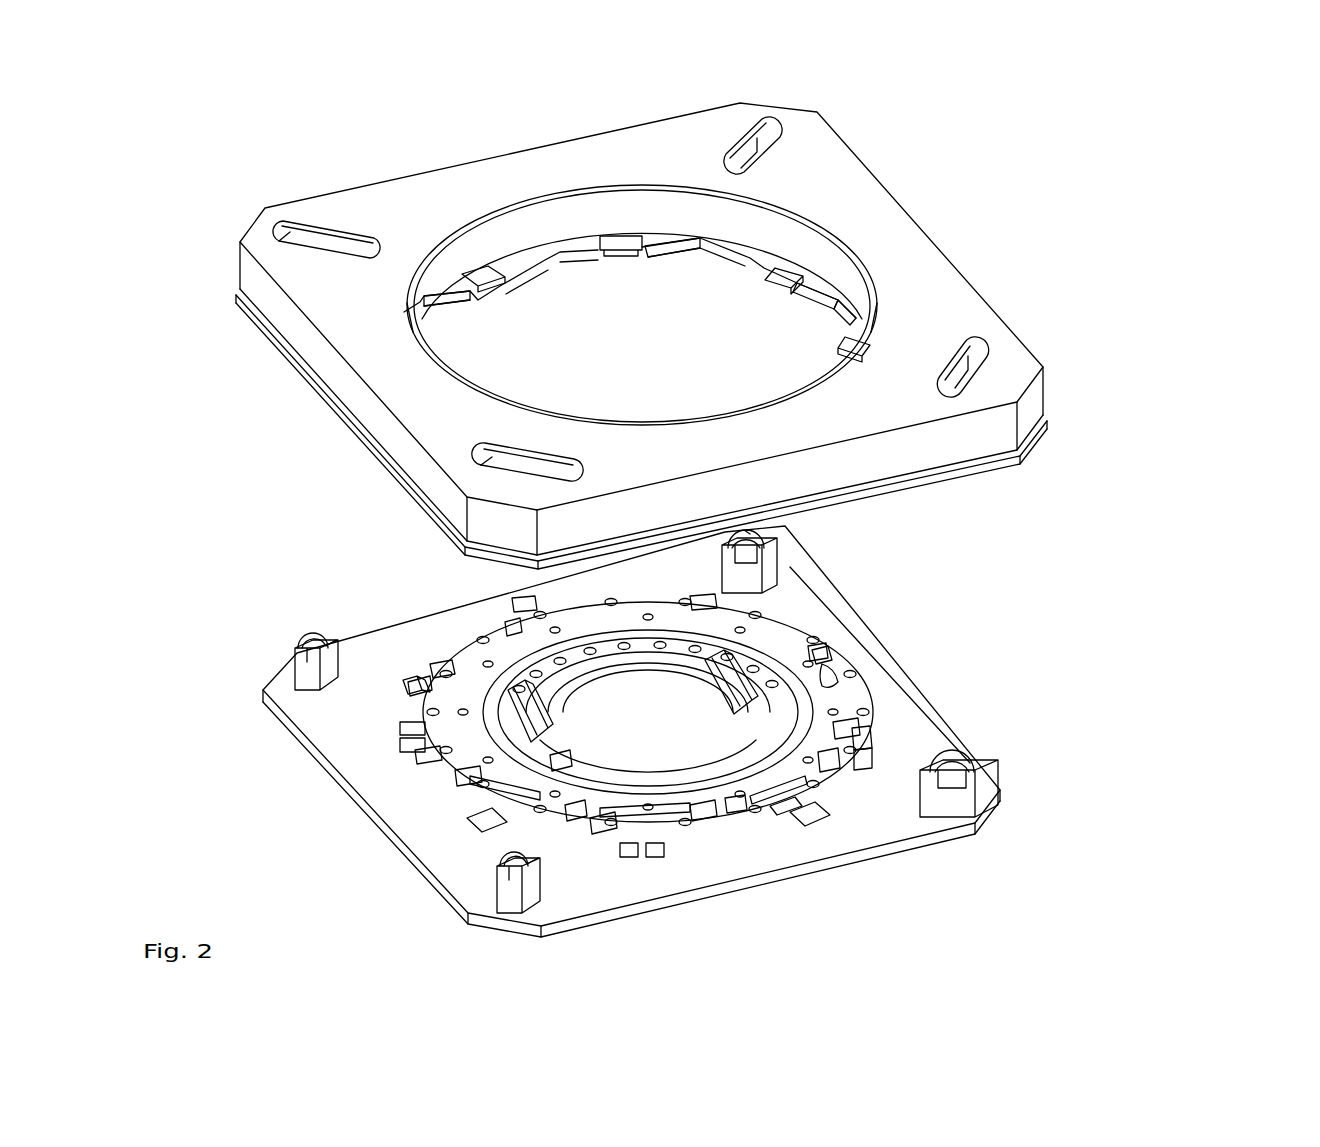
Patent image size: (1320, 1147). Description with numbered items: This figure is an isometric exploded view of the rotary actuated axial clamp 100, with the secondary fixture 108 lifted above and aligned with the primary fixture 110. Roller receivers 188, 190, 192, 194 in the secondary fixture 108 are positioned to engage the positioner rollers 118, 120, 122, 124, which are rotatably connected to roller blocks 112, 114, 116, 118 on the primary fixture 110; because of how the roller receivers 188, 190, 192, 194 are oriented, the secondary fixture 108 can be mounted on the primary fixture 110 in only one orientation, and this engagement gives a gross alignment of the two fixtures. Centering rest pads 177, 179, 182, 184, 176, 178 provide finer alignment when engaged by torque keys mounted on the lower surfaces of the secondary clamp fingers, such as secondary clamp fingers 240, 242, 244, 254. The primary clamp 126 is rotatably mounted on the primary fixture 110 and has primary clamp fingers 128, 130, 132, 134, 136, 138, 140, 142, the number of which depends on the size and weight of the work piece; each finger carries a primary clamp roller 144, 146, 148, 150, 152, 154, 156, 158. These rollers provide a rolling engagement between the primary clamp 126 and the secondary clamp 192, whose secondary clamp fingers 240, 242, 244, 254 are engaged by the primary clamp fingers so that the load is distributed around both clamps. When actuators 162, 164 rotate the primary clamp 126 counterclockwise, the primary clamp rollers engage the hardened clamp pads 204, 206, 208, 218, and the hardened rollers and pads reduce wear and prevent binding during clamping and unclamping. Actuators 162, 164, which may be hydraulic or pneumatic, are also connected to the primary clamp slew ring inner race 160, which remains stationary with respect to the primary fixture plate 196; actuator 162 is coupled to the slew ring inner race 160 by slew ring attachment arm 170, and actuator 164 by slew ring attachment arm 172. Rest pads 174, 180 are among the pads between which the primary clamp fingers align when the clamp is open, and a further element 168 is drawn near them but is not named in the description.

The rotary actuated axial clamp 100 is at (1072, 395).
The secondary fixture 108 is at (912, 185).
The primary fixture 110 is at (338, 789).
The roller block 112 is at (980, 773).
The roller block 114 is at (777, 565).
The roller block 116 is at (295, 645).
The positioner roller 118 is at (947, 762).
The positioner roller 120 is at (732, 535).
The positioner roller 122 is at (320, 633).
The positioner roller 124 is at (517, 850).
The primary clamp 126 is at (745, 642).
The primary clamp finger 128 is at (813, 647).
The primary clamp finger 130 is at (660, 610).
The primary clamp finger 132 is at (507, 628).
The primary clamp finger 134 is at (447, 673).
The primary clamp finger 136 is at (462, 775).
The primary clamp finger 138 is at (600, 823).
The primary clamp finger 140 is at (698, 813).
The primary clamp finger 142 is at (828, 760).
The primary clamp roller 144 is at (822, 648).
The primary clamp roller 146 is at (700, 602).
The primary clamp roller 148 is at (525, 608).
The primary clamp roller 150 is at (418, 687).
The primary clamp roller 152 is at (425, 755).
The primary clamp roller 154 is at (570, 810).
The primary clamp roller 156 is at (733, 807).
The primary clamp roller 158 is at (837, 738).
The primary clamp slew ring inner race 160 is at (612, 660).
The actuator 162 is at (826, 650).
The actuator 164 is at (405, 684).
The Rest Pad 168 is at (818, 822).
The slew ring attachment arm 170 is at (790, 567).
The slew ring attachment arm 172 is at (560, 762).
The rest pad 174 is at (790, 815).
The centering rest pad 176 is at (860, 742).
The centering rest pad 177 is at (427, 728).
The centering rest pad 178 is at (862, 718).
The centering rest pad 179 is at (427, 746).
The rest pad 180 is at (485, 822).
The centering rest pad 182 is at (630, 853).
The centering rest pad 184 is at (663, 850).
The roller receiver 188 is at (965, 352).
The roller receiver 190 is at (745, 137).
The roller receiver 192 is at (338, 238).
The roller receiver 194 is at (487, 443).
The primary fixture plate 196 is at (990, 813).
The clamp pad 204 is at (787, 272).
The clamp pad 206 is at (617, 237).
The clamp pad 208 is at (477, 273).
The clamp pad 218 is at (867, 338).
The secondary clamp finger 240 is at (820, 287).
The secondary clamp finger 242 is at (665, 241).
The secondary clamp finger 244 is at (447, 287).
The secondary clamp finger 254 is at (850, 338).